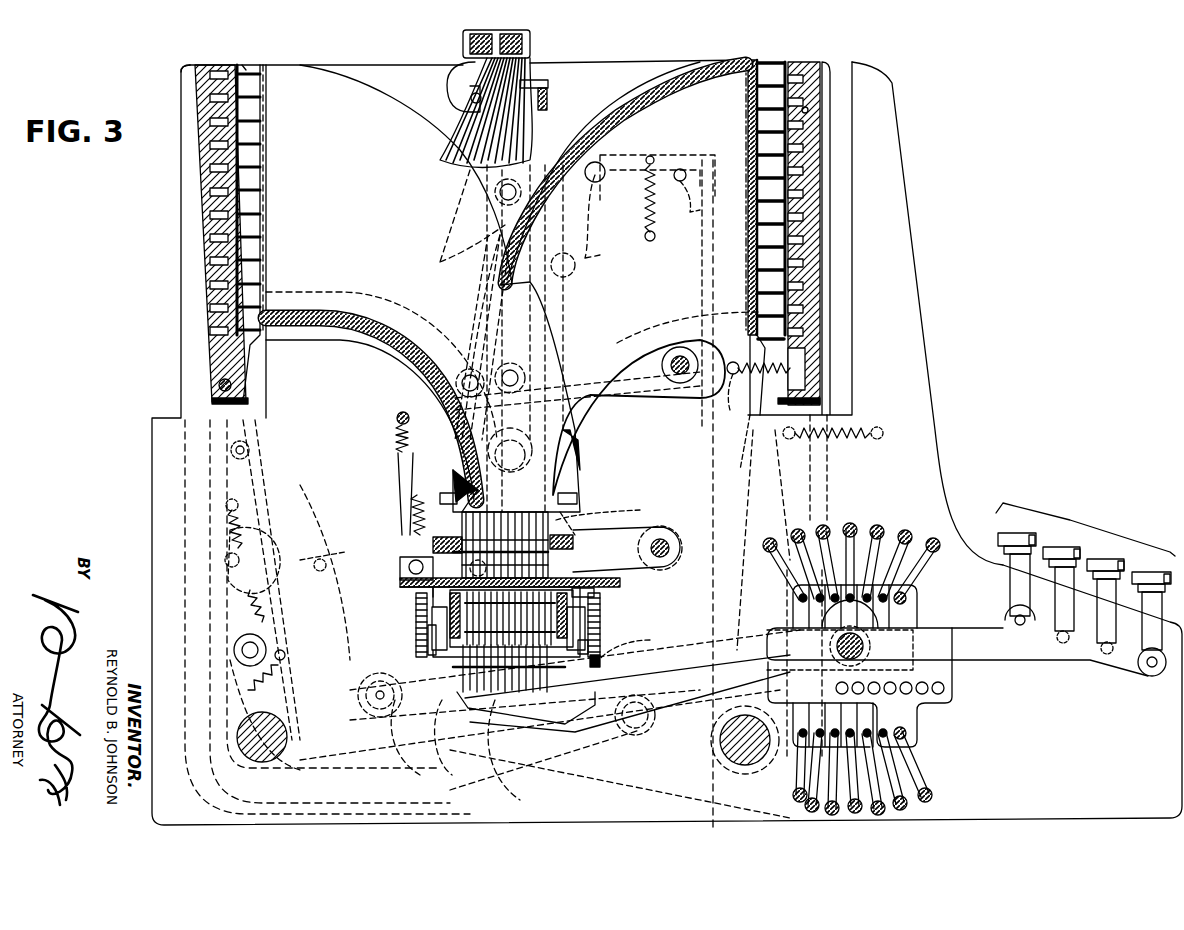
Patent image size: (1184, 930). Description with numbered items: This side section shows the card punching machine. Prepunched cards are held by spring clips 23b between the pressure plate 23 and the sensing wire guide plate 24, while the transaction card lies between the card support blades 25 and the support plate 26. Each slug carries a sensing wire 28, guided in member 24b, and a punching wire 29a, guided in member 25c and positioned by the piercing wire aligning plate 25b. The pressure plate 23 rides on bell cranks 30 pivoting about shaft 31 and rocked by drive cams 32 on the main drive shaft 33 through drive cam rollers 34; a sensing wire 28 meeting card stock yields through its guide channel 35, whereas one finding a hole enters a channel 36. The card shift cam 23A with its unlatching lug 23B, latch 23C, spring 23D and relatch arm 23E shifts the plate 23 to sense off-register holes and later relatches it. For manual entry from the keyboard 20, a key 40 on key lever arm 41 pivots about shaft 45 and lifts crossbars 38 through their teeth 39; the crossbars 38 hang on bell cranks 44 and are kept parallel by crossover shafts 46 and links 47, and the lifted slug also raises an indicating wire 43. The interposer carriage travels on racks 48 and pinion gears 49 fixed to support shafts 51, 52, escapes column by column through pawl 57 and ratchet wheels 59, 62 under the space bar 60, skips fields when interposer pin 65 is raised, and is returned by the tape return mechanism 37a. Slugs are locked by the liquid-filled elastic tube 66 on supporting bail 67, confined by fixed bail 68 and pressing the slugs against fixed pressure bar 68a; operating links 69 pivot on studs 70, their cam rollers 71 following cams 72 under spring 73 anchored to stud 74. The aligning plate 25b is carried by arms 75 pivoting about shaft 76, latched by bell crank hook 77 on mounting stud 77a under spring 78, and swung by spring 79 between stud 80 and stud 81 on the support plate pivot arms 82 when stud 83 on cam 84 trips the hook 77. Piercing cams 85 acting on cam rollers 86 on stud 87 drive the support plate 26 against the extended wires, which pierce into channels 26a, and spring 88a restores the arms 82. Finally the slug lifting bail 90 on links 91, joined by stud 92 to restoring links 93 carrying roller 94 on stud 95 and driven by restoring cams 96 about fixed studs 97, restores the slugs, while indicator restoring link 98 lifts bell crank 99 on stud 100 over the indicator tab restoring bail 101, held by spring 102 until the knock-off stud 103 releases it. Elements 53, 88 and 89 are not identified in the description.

The keyboard 20 is at (1090, 527).
The pressure plate 23 is at (215, 68).
The spring clips 23b is at (238, 70).
The sensing wire guide plate 24 is at (250, 70).
The guide channel 35 is at (248, 70).
The channel 36 is at (185, 70).
The card support blades 25 is at (775, 66).
The piercing wire aligning plate 25b is at (748, 62).
The guide member 25c is at (648, 82).
The support plate 26 is at (827, 68).
The channels 26a is at (808, 110).
The sensing wire 28 is at (290, 292).
The guide member 24b is at (352, 356).
The punching wire 29a is at (460, 263).
The bell cranks 30 is at (236, 707).
The shaft 31 is at (251, 749).
The drive cams 32 is at (692, 654).
The main drive shaft 33 is at (580, 457).
The drive cam rollers 34 is at (635, 736).
The tape return mechanism 37a is at (420, 642).
The crossbars 38 is at (470, 682).
The teeth 39 is at (466, 761).
The key 40 is at (1074, 552).
The key lever arm 41 is at (976, 656).
The indicating wire 43 is at (465, 146).
The bell cranks 44 is at (596, 711).
The key arm shaft 45 is at (868, 649).
The crossover shafts 46 is at (925, 537).
The links 47 is at (806, 567).
The racks 48 is at (430, 584).
The pinion gears 49 is at (600, 632).
The support shaft 51 is at (590, 627).
The support shaft 52 is at (432, 642).
The stop 53 is at (602, 659).
The pawl 57 is at (447, 607).
The ratchet wheel 59 is at (588, 612).
The space bar 60 is at (546, 692).
The ratchet wheel 62 is at (440, 626).
The interposer pin 65 is at (470, 672).
The elastic tube 66 is at (425, 545).
The supporting bail 67 is at (410, 570).
The fixed bail 68 is at (445, 540).
The fixed pressure bar 68a is at (565, 540).
The operating links 69 is at (433, 592).
The studs 70 is at (666, 560).
The cam rollers 71 is at (548, 562).
The cams 72 is at (580, 516).
The spring 73 is at (398, 456).
The stud 74 is at (398, 413).
The arms 75 is at (712, 481).
The shaft 76 is at (736, 756).
The bell crank hook 77 is at (682, 160).
The mounting stud 77a is at (605, 165).
The spring 78 is at (660, 229).
The spring 79 is at (742, 442).
The stud 80 is at (736, 397).
The stud 81 is at (800, 368).
The support plate pivot arms 82 is at (828, 467).
The stud 83 is at (568, 277).
The cam 84 is at (605, 258).
The piercing cams 85 is at (341, 649).
The cam rollers 86 is at (411, 771).
The stud 87 is at (379, 721).
The lever 88 is at (751, 502).
The spring 88a is at (860, 430).
The link 89 is at (694, 196).
The slug lifting bail 90 is at (595, 594).
The links 91 is at (578, 442).
The stud 92 is at (512, 438).
The restoring links 93 is at (580, 352).
The roller 94 is at (465, 355).
The stud 95 is at (480, 372).
The restoring cams 96 is at (458, 471).
The fixed studs 97 is at (680, 375).
The indicator restoring link 98 is at (492, 253).
The bell crank 99 is at (470, 58).
The stud 100 is at (471, 100).
The indicator tab restoring bail 101 is at (522, 44).
The spring 102 is at (548, 85).
The knock-off stud 103 is at (548, 101).
The card shift cam 23A is at (273, 526).
The unlatching lug 23B is at (339, 551).
The latch 23C is at (319, 559).
The spring 23D is at (240, 509).
The relatch arm 23E is at (262, 571).